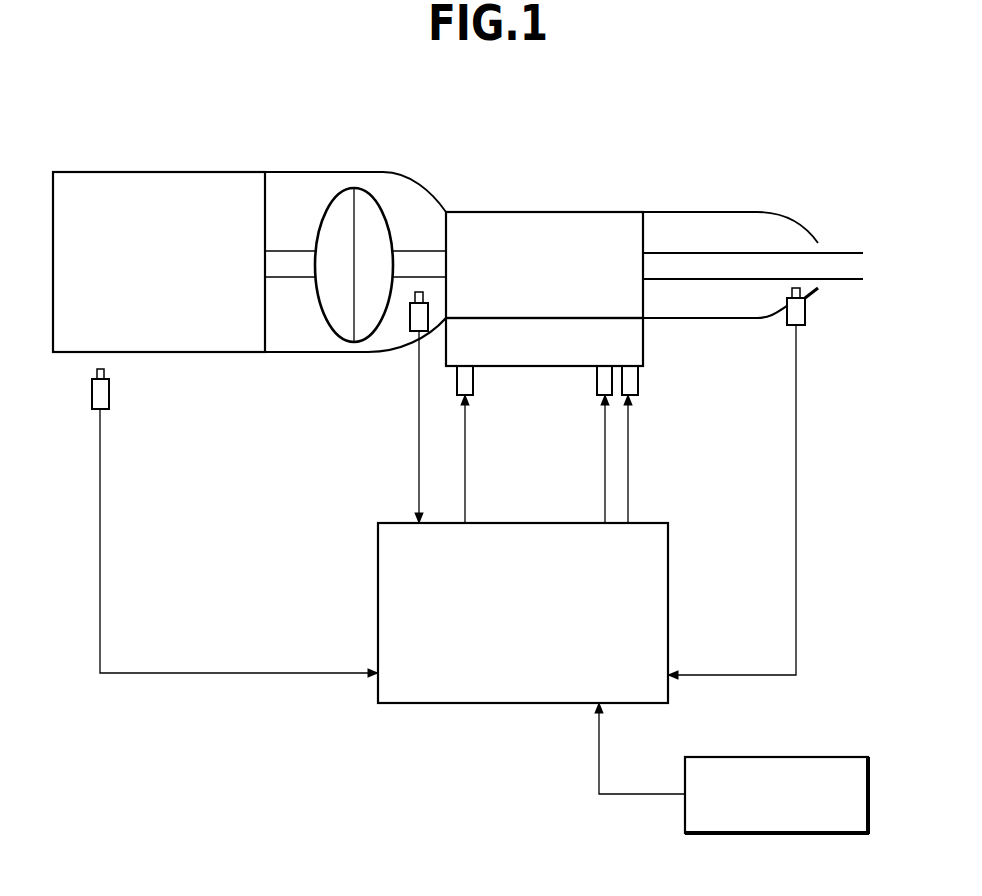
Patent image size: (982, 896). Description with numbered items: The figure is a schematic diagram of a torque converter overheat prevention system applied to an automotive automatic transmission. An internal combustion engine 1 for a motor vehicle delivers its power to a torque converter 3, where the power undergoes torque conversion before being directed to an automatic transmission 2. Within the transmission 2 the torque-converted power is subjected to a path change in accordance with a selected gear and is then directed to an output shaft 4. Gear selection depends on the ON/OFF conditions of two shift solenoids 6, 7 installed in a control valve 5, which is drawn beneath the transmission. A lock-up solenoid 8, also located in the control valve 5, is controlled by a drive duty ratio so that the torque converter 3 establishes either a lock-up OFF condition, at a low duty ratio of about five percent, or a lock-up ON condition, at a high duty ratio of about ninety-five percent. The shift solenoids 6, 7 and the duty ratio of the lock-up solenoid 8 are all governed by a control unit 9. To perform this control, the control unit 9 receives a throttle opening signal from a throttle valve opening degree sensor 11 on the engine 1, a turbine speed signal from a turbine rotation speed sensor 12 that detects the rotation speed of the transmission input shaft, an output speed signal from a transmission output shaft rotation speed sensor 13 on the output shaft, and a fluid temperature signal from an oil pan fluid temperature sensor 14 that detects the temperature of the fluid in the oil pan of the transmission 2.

The internal combustion engine 1 is at (173, 172).
The automatic transmission 2 is at (565, 212).
The torque converter 3 is at (383, 208).
The output shaft 4 is at (732, 253).
The control valve 5 is at (643, 345).
The shift solenoid 6 is at (593, 384).
The shift solenoid 7 is at (640, 382).
The lock-up solenoid 8 is at (476, 380).
The control unit 9 is at (652, 523).
The throttle valve opening degree sensor 11 is at (110, 393).
The turbine rotation speed sensor 12 is at (410, 331).
The transmission output shaft rotation speed sensor 13 is at (805, 312).
The oil pan fluid temperature sensor 14 is at (795, 757).